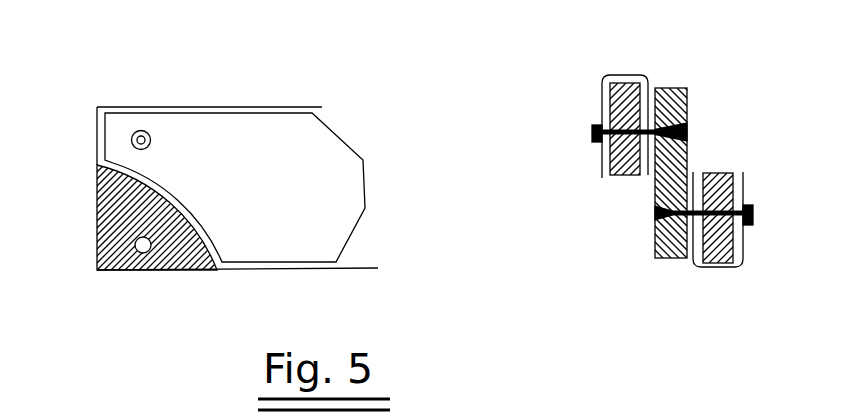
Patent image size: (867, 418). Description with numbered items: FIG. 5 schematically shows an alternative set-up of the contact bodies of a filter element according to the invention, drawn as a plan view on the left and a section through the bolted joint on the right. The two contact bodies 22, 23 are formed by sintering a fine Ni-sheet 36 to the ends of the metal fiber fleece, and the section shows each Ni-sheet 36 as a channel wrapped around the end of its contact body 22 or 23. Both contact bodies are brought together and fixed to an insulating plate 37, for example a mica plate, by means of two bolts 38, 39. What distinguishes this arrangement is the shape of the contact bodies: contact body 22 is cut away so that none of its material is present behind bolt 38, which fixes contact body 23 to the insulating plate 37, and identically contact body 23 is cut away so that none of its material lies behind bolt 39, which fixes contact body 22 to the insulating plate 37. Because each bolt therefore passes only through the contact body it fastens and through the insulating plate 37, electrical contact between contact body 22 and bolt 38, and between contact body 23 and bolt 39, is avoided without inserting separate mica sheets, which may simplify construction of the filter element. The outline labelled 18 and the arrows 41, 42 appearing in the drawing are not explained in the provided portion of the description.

The panel 18 is at (365, 242).
The contact body 22 is at (628, 173).
The contact body 23 is at (720, 180).
The Ni-sheet 36 is at (288, 133).
The insulating plate 37 is at (108, 250).
The bolt 38 is at (141, 250).
The bolt 39 is at (135, 132).
The direction arrow 41 is at (584, 222).
The direction arrow 42 is at (768, 98).